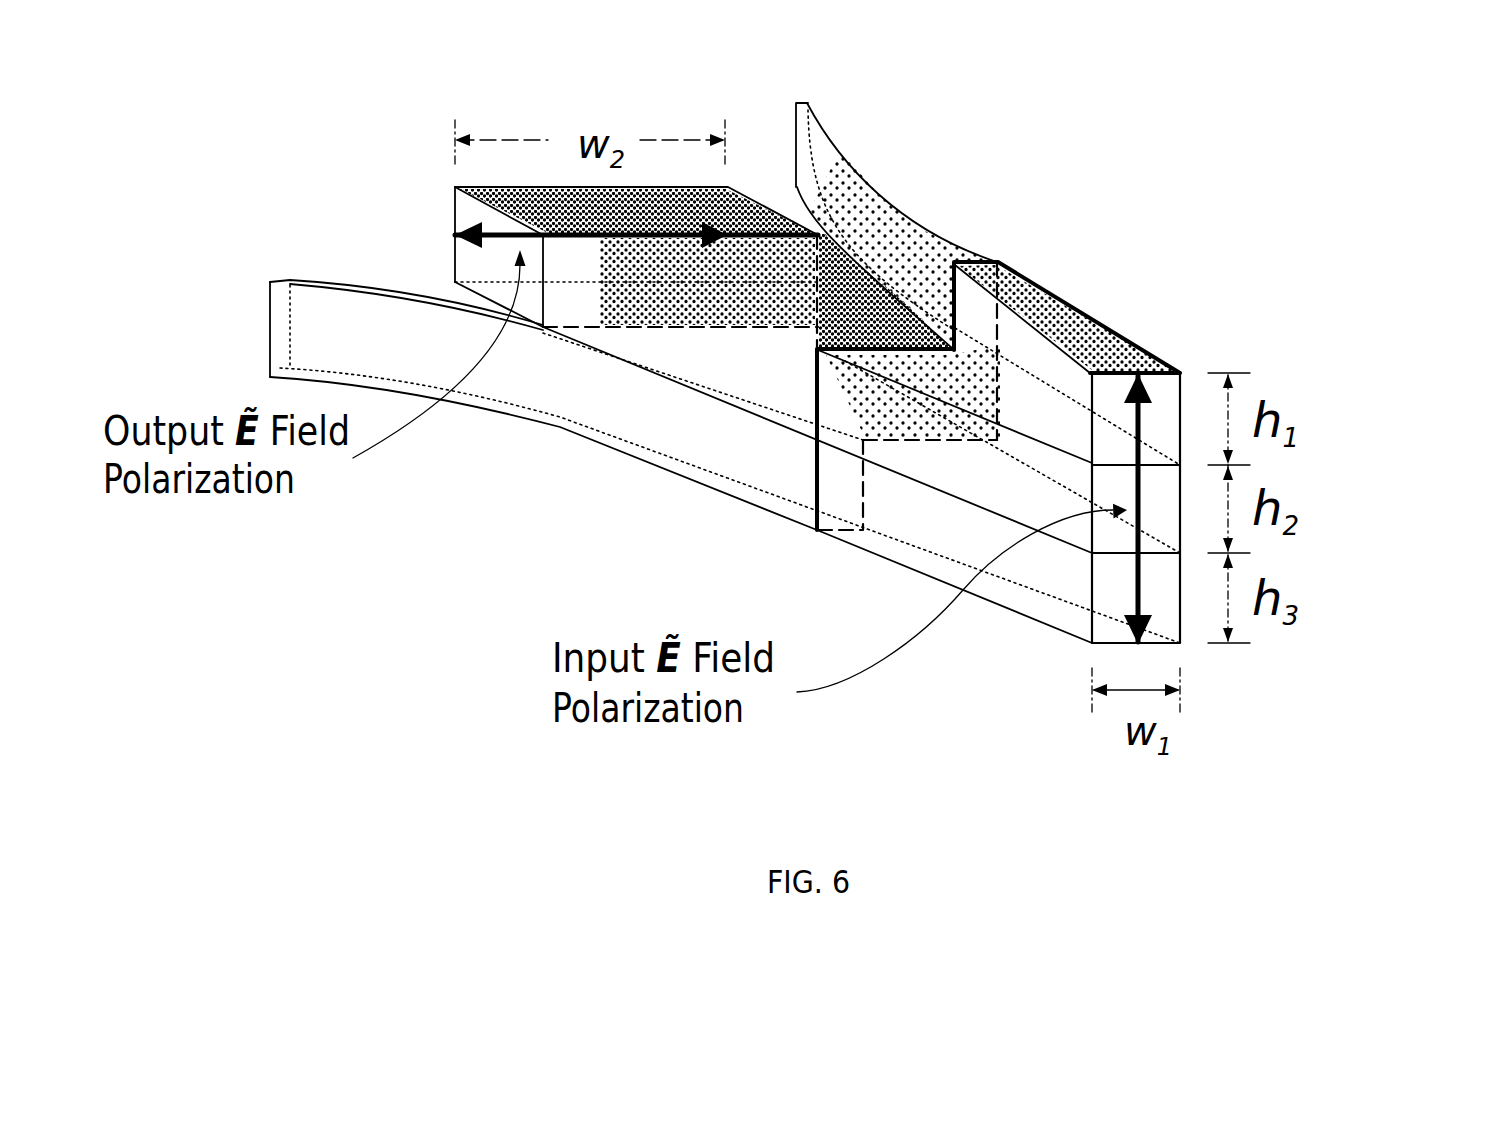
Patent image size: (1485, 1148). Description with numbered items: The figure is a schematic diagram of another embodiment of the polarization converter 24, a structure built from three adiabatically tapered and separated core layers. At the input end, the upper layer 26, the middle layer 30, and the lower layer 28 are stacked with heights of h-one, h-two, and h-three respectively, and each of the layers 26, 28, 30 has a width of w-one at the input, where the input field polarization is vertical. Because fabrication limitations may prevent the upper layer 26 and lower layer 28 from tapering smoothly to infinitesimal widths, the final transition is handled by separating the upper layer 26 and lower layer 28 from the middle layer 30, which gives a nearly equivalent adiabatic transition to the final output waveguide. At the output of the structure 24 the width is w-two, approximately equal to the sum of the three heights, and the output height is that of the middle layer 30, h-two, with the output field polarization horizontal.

The polarization converter 24 is at (514, 455).
The upper layer 26 is at (1160, 402).
The lower layer 28 is at (1160, 602).
The middle layer 30 is at (1160, 487).